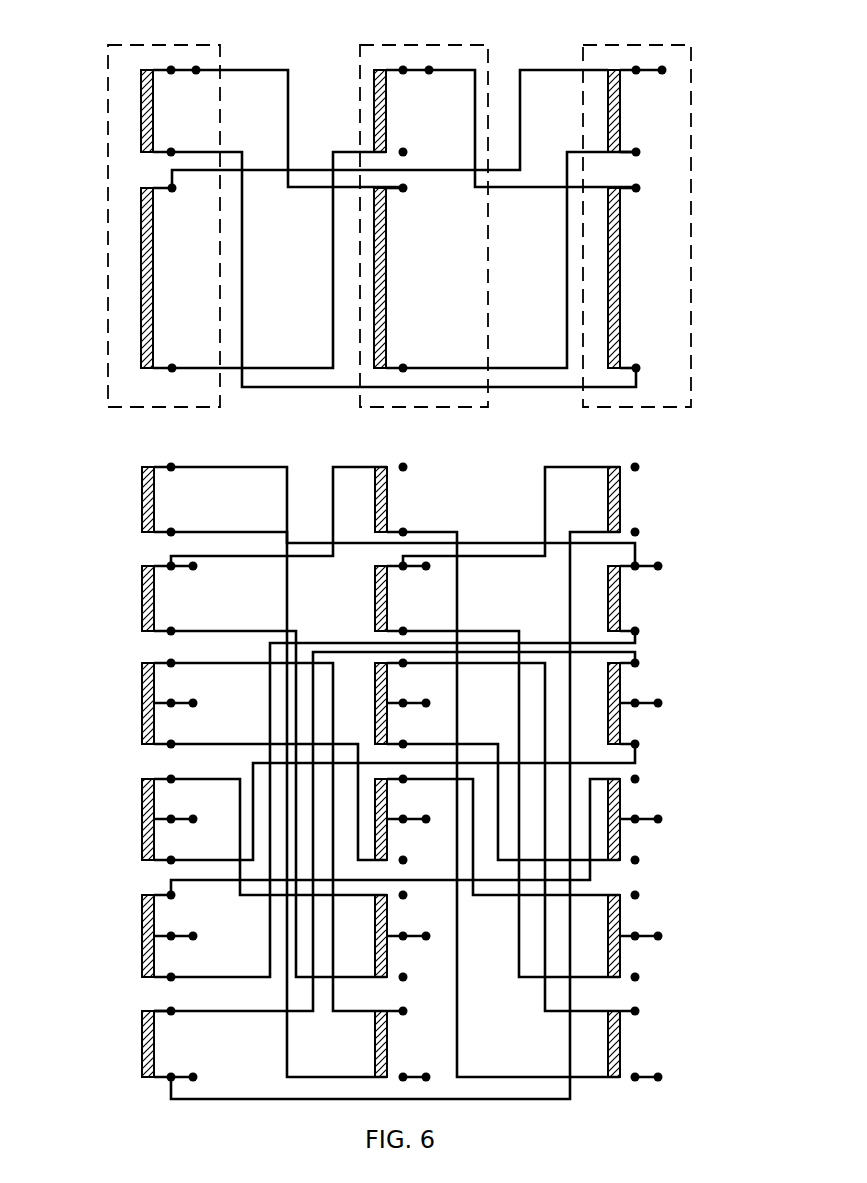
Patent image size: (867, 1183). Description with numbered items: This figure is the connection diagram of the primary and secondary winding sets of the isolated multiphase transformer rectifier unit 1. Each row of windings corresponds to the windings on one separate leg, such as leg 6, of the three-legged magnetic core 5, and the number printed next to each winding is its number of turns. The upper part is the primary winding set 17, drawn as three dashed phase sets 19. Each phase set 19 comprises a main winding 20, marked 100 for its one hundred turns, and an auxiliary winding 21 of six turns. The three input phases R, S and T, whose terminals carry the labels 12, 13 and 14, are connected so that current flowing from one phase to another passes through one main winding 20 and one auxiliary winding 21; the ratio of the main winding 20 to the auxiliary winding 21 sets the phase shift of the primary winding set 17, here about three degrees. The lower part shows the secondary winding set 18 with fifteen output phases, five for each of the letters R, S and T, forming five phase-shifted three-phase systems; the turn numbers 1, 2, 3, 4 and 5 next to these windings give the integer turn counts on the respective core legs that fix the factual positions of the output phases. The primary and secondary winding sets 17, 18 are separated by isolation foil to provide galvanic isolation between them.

The R phase input terminal 12 is at (196, 69).
The S phase input terminal 13 is at (430, 69).
The T phase input terminal 14 is at (662, 69).
The primary winding set 17 is at (717, 62).
The secondary winding set 18 is at (715, 462).
The phase set 19 is at (163, 45).
The main winding 20 is at (140, 274).
The auxiliary winding 21 is at (140, 107).
The leg 6 is at (390, 111).
The coil 100 is at (406, 278).
The isolated multiphase transformer rectifier unit 1 is at (393, 843).
The coil 2 is at (393, 821).
The coil 3 is at (393, 818).
The coil 4 is at (393, 819).
The magnetic core 5 is at (393, 499).